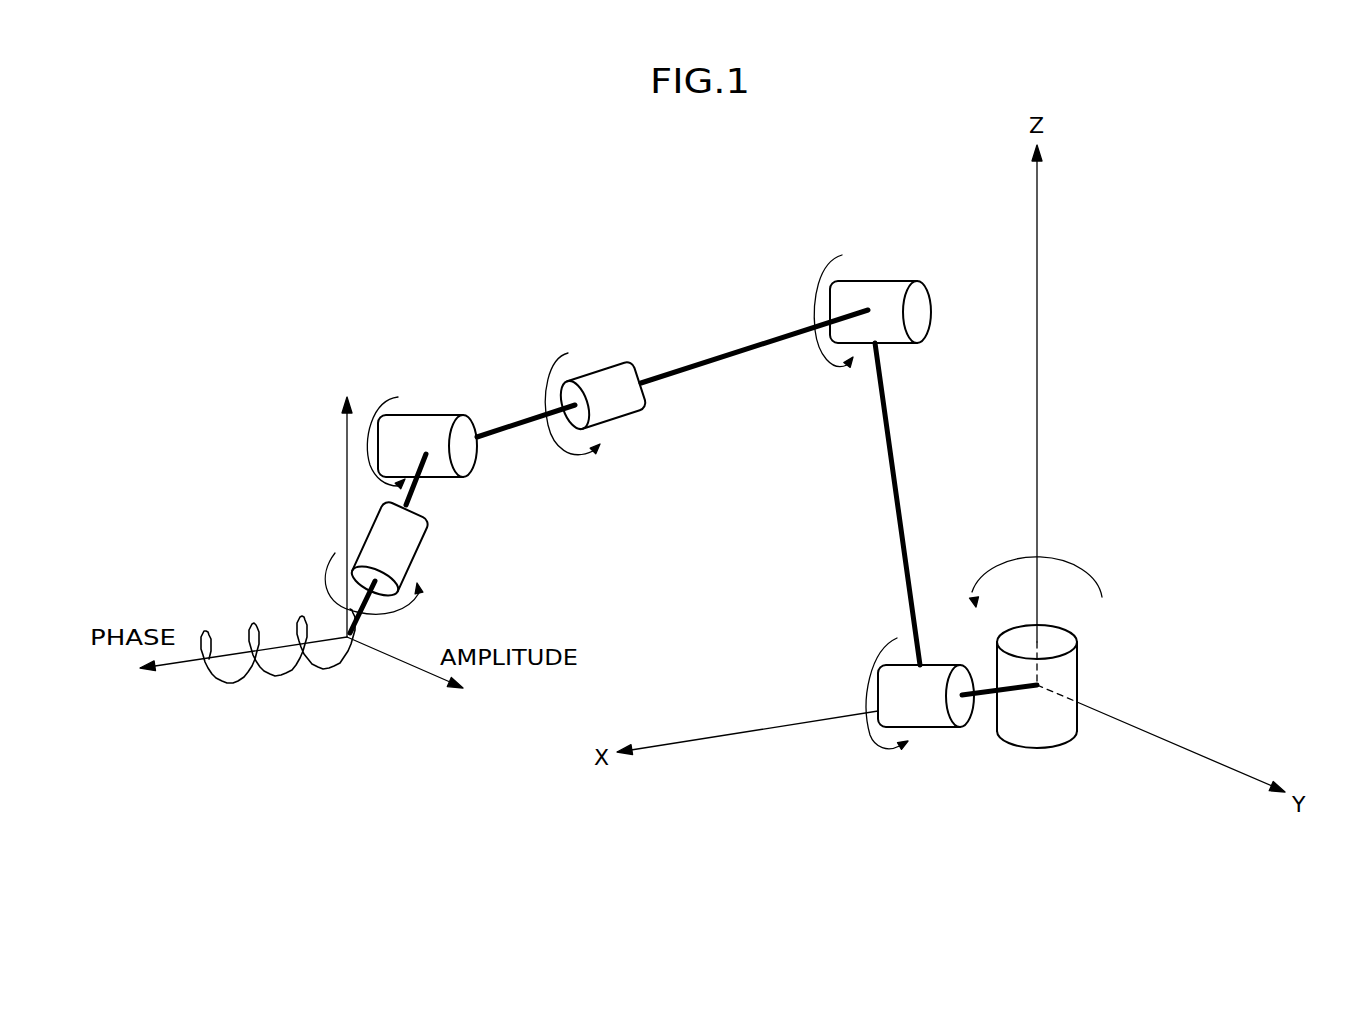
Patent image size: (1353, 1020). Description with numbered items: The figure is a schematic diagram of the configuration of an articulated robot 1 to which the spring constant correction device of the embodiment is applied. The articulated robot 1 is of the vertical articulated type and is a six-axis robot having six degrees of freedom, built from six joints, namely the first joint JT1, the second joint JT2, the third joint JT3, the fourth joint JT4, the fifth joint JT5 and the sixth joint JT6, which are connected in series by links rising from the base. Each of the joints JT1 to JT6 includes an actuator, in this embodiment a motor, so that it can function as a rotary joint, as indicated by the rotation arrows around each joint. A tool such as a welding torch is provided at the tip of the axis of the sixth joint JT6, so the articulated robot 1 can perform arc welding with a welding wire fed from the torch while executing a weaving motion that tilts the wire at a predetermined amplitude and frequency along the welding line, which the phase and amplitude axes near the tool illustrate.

The articulated robot 1 is at (632, 218).
The first joint JT1 is at (1047, 652).
The second joint JT2 is at (920, 702).
The third joint JT3 is at (872, 311).
The fourth joint JT4 is at (600, 405).
The fifth joint JT5 is at (445, 443).
The sixth joint JT6 is at (391, 557).